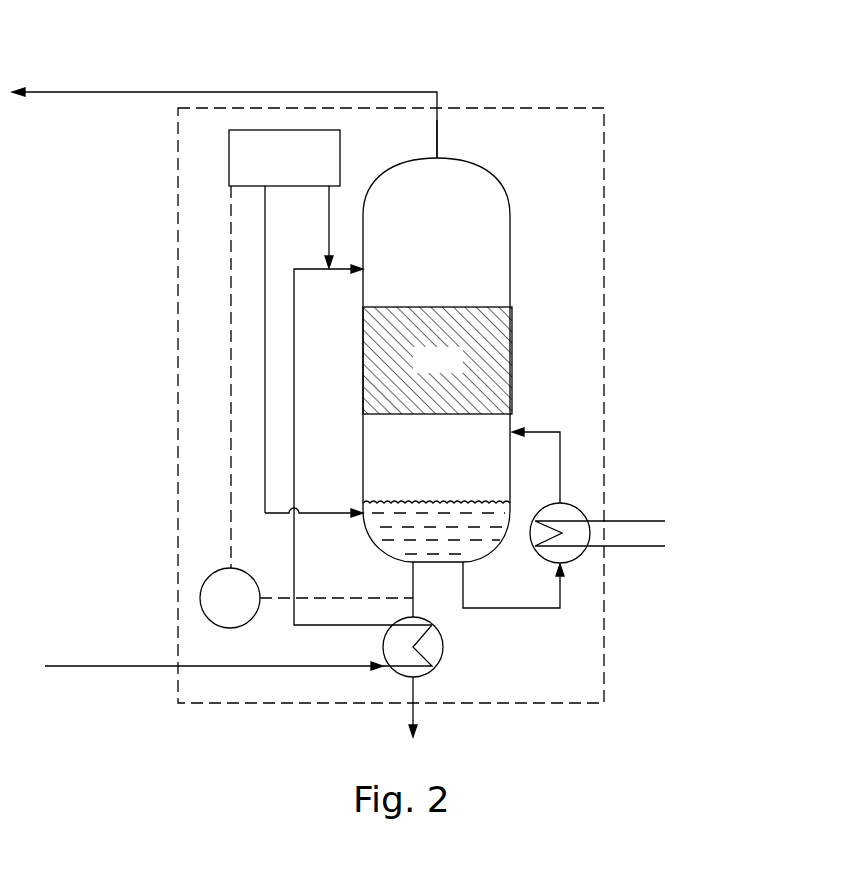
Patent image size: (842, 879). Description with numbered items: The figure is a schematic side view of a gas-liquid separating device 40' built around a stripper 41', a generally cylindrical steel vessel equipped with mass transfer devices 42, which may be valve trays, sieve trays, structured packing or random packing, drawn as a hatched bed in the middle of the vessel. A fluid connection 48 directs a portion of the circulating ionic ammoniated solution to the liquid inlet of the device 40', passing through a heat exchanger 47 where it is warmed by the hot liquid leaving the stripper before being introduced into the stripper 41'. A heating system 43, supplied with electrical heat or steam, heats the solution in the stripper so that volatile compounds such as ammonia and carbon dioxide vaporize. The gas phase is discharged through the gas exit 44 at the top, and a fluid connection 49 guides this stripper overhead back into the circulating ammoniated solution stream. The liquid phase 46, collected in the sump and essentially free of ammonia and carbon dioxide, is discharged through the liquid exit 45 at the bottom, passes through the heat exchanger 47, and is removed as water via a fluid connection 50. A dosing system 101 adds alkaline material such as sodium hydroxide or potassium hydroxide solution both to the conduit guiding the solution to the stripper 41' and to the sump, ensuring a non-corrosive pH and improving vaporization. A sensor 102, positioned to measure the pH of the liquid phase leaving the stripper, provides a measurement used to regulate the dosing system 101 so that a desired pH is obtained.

The gas-liquid separating device 40' is at (391, 382).
The stripper 41' is at (463, 349).
The mass transfer devices 42 is at (512, 358).
The heating system 43 is at (547, 563).
The gas exit 44 is at (437, 158).
The liquid exit 45 is at (412, 565).
The liquid phase 46 is at (378, 527).
The heat exchanger 47 is at (445, 648).
The fluid connection 48 is at (167, 666).
The fluid connection 49 is at (95, 92).
The fluid connection 50 is at (393, 715).
The dosing system 101 is at (330, 163).
The sensor 102 is at (235, 597).